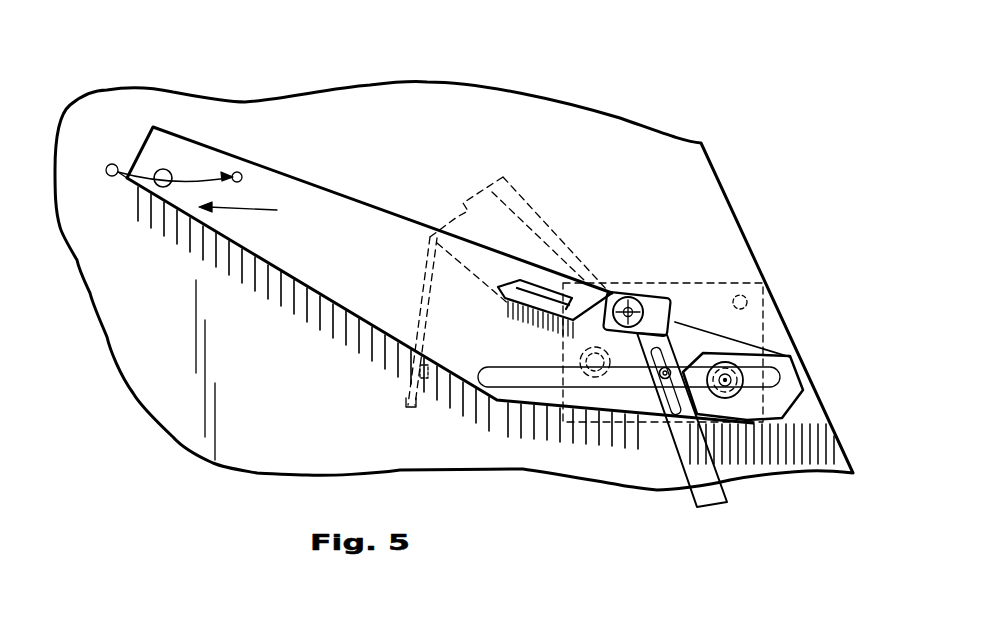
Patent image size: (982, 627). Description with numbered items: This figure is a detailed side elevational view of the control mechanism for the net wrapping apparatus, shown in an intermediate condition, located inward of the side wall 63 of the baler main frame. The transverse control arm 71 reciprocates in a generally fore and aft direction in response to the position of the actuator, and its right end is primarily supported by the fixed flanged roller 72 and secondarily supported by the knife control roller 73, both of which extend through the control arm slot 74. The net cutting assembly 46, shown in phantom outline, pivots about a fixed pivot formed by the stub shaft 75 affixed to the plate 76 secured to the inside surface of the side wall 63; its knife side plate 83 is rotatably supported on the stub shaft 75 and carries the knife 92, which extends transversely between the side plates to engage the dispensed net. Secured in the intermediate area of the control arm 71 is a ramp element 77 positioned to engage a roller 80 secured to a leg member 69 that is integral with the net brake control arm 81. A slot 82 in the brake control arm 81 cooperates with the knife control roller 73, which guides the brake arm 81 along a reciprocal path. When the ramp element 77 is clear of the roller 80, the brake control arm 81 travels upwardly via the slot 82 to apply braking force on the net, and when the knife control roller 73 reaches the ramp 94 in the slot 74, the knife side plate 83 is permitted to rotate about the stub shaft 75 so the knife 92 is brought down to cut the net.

The net cutting assembly 46 is at (521, 172).
The side wall 63 is at (367, 131).
The leg member 69 is at (646, 298).
The transverse control arm 71 is at (310, 251).
The fixed flanged roller 72 is at (744, 363).
The knife control roller 73 is at (660, 388).
The control arm slot 74 is at (520, 374).
The stub shaft 75 is at (584, 356).
The plate 76 is at (710, 282).
The ramp element 77 is at (516, 306).
The roller 80 is at (622, 292).
The net brake control arm 81 is at (706, 501).
The slot 82 is at (692, 388).
The knife side plate 83 is at (457, 217).
The knife 92 is at (404, 407).
The ramp 94 is at (705, 352).